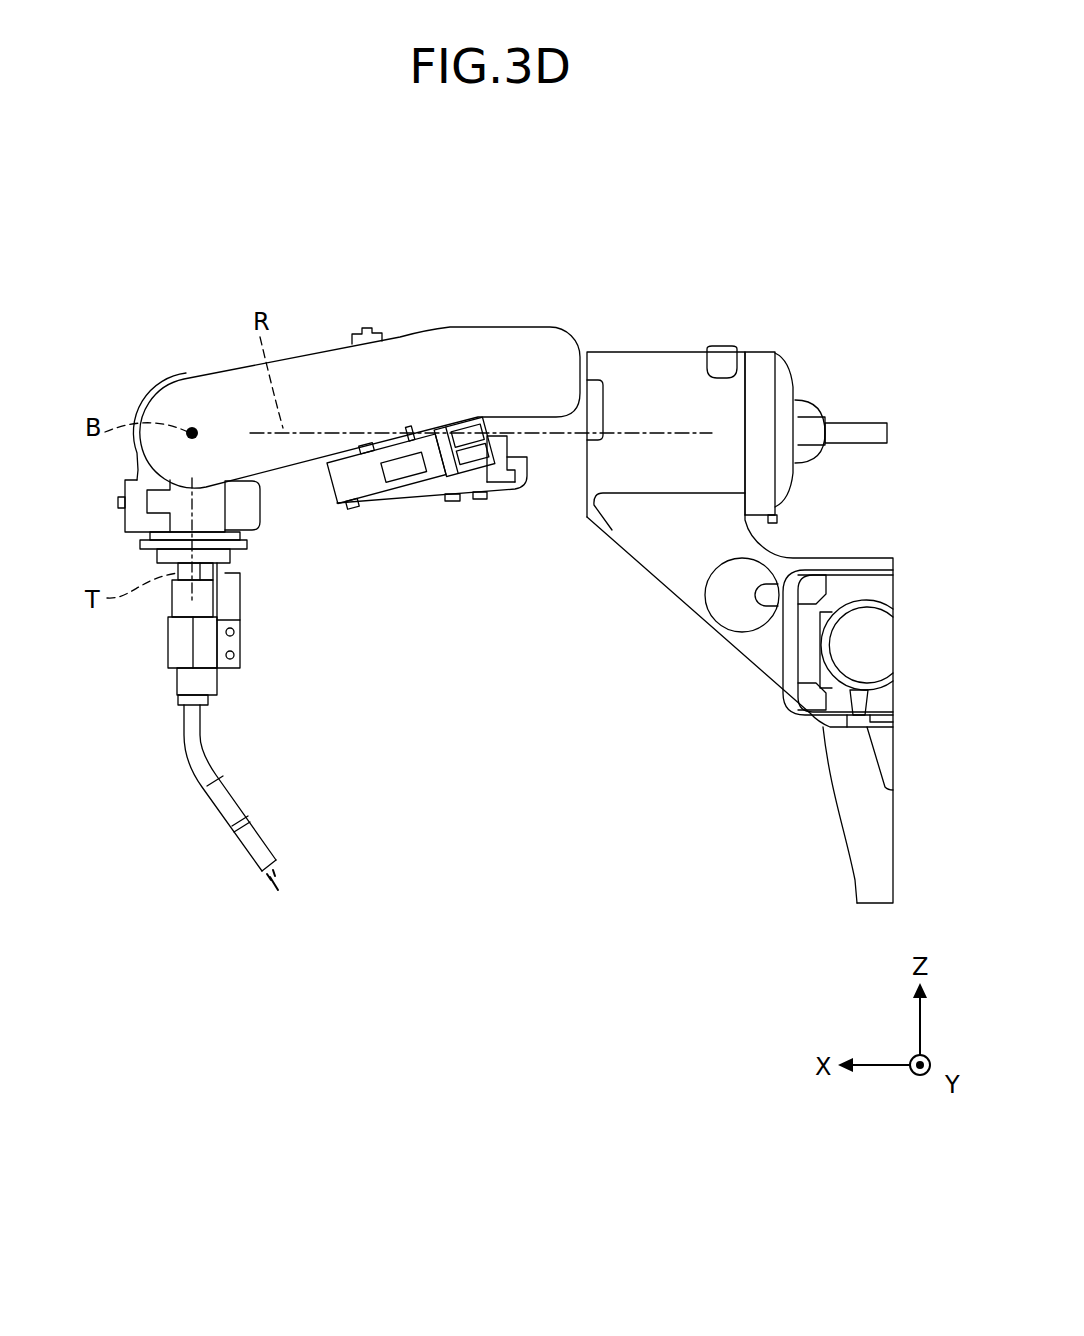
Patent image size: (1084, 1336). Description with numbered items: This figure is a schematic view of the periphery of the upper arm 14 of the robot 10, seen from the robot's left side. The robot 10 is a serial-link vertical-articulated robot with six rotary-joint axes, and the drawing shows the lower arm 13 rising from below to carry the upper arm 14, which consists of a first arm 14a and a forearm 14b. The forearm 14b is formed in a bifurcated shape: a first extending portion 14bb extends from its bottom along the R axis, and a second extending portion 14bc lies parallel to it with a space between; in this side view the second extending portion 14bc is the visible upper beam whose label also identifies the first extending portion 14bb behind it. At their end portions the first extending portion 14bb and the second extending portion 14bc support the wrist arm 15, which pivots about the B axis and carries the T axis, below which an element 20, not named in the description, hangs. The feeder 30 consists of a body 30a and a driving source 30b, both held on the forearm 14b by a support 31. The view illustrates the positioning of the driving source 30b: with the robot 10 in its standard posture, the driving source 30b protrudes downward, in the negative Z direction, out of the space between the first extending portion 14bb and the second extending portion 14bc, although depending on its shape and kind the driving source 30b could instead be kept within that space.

The robot 10 is at (240, 212).
The lower arm 13 is at (857, 784).
The upper arm 14 is at (688, 252).
The first arm 14a is at (650, 350).
The forearm 14b is at (572, 312).
The second extending portion 14bc is at (422, 327).
The first extending portion 14bb is at (367, 336).
The wrist arm 15 is at (106, 475).
The welding torch 20 is at (186, 735).
The feeder 30 is at (496, 578).
The body 30a is at (465, 478).
The driving source 30b is at (365, 488).
The support 31 is at (515, 490).